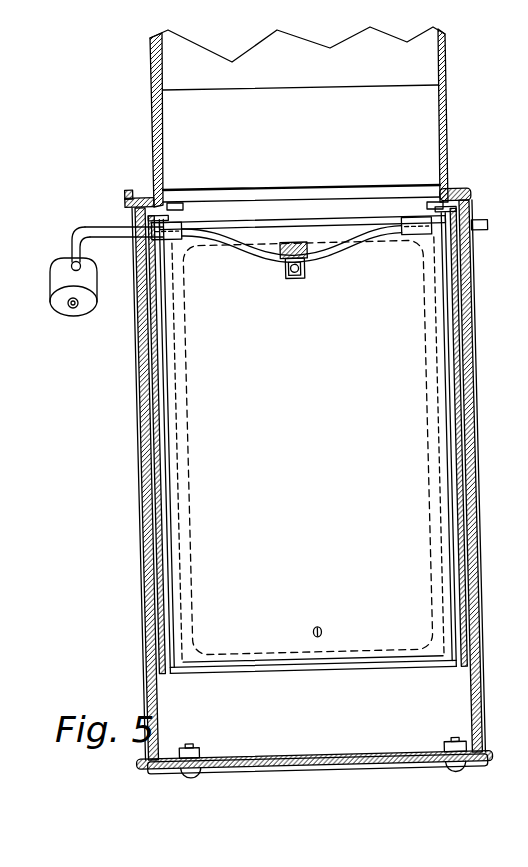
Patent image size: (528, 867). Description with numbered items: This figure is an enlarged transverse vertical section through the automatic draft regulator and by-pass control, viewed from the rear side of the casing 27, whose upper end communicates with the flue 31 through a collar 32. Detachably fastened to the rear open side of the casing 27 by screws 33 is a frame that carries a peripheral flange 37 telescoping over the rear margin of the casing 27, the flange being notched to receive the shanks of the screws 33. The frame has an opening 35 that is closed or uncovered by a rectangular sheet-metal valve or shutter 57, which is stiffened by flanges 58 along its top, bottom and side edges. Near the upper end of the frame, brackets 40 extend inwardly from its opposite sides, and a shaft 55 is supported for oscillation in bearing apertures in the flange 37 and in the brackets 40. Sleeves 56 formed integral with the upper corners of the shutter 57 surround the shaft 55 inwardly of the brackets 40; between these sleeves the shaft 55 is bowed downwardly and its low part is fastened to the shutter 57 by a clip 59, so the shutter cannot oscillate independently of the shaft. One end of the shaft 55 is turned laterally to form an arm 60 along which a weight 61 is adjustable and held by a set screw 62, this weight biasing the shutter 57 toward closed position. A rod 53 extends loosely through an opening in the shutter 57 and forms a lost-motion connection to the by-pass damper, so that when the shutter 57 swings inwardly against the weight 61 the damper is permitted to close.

The flue 31 is at (299, 118).
The collar 32 is at (413, 92).
The peripheral flange 37 is at (459, 184).
The brackets 40 is at (153, 318).
The valve or shutter 57 is at (220, 449).
The casing 27 is at (158, 500).
The flanges 58 is at (347, 221).
The sleeves 56 is at (190, 235).
The clip 59 is at (291, 260).
The opening 35 is at (190, 536).
The rod 53 is at (322, 630).
The screws 33 is at (197, 782).
The shaft 55 is at (99, 226).
The arm 60 is at (70, 248).
The set screw 62 is at (67, 263).
The weight 61 is at (55, 278).